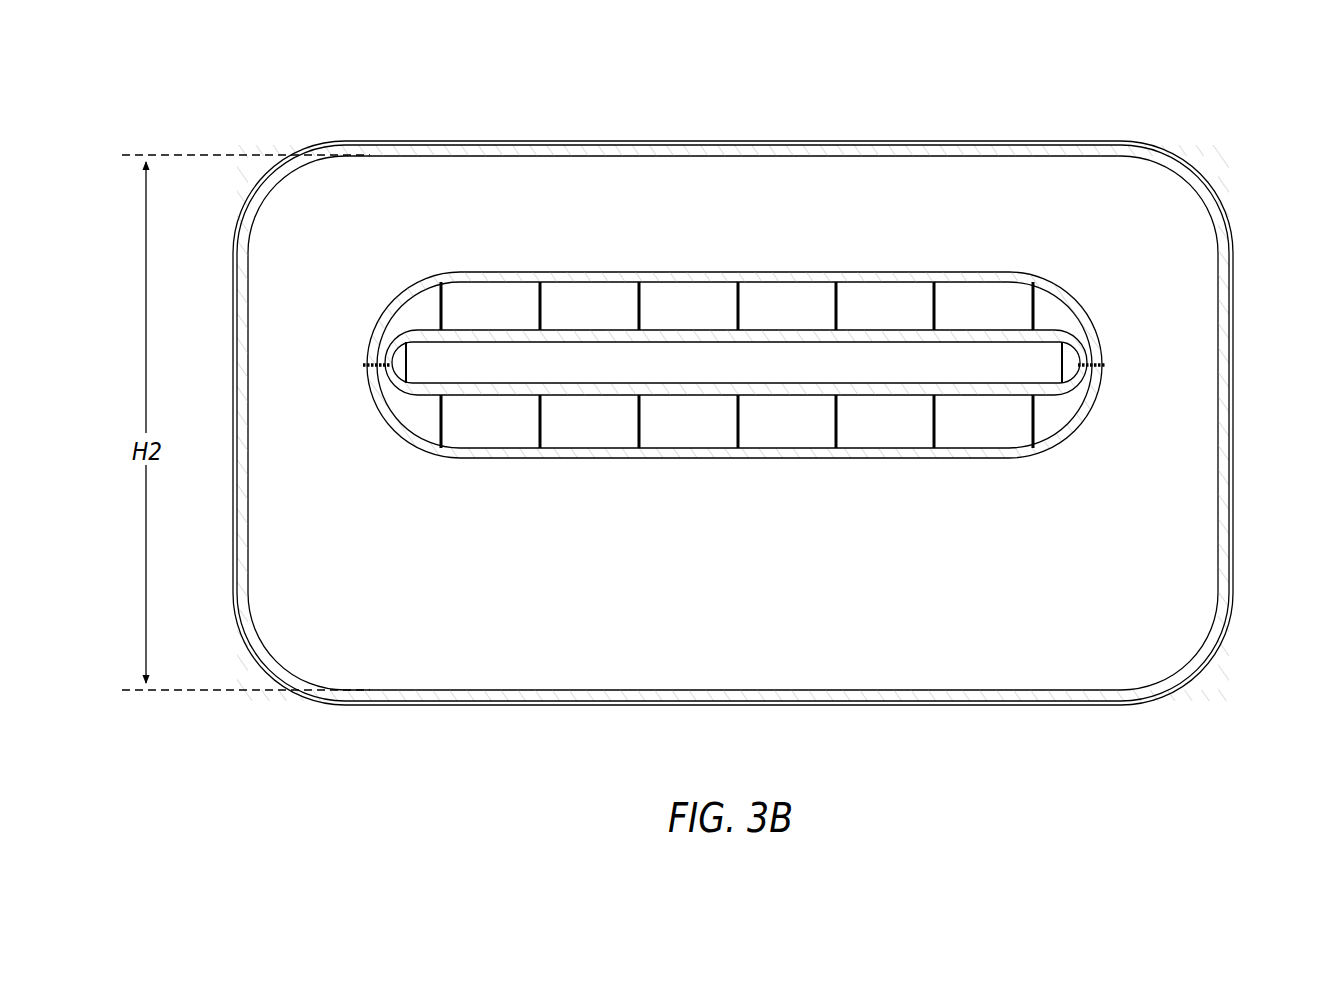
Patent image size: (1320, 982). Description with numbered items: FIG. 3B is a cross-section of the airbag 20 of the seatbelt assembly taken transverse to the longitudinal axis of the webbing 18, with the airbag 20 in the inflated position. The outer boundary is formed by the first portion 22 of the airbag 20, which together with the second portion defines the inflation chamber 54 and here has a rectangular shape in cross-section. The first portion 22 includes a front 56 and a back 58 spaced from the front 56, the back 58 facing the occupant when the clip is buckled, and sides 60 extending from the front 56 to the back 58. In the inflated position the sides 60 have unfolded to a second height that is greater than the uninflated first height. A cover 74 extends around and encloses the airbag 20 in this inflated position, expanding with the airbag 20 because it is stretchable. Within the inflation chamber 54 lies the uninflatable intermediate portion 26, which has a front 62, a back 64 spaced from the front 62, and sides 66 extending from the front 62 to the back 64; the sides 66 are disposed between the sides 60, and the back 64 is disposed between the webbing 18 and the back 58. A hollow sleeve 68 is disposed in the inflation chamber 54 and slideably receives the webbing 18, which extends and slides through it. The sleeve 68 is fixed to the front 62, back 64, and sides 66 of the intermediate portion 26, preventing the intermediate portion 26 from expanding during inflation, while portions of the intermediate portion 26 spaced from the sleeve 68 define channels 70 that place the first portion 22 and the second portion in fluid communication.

The webbing 18 is at (640, 362).
The airbag 20 is at (929, 134).
The first portion 22 is at (1052, 143).
The intermediate portion 26 is at (742, 282).
The inflation chamber 54 is at (1069, 604).
The front 56 is at (715, 141).
The back 58 is at (481, 705).
The sides 60 is at (235, 437).
The front 62 is at (677, 272).
The back 64 is at (838, 457).
The sides 66 is at (365, 372).
The sleeve 68 is at (714, 405).
The channels 70 is at (670, 303).
The cover 74 is at (480, 141).